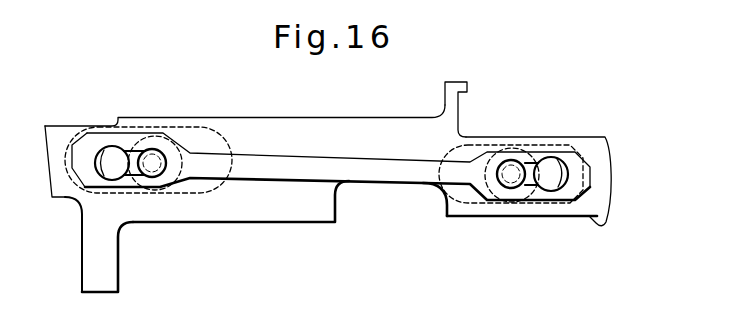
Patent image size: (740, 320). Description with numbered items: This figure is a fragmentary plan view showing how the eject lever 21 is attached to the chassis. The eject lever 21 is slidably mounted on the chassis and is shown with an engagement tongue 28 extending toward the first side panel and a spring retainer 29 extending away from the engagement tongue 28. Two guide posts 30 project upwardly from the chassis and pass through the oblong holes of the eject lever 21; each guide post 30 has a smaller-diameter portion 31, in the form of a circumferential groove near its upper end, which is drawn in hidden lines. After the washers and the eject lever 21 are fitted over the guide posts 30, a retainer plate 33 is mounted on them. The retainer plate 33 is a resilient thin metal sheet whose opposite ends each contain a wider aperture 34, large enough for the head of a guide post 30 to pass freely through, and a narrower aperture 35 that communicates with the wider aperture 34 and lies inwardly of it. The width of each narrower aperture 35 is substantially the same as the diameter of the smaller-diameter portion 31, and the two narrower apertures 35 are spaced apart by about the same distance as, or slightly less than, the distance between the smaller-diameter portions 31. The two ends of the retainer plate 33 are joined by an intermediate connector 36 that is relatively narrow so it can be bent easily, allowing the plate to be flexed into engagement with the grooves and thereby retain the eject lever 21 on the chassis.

The eject lever 21 is at (312, 132).
The engagement tongue 28 is at (109, 272).
The spring retainer 29 is at (458, 103).
The guide post 30 is at (153, 160).
The smaller-diameter portion 31 is at (164, 195).
The retainer plate 33 is at (293, 172).
The wider aperture 34 is at (105, 148).
The narrower aperture 35 is at (167, 143).
The intermediate connector 36 is at (383, 172).